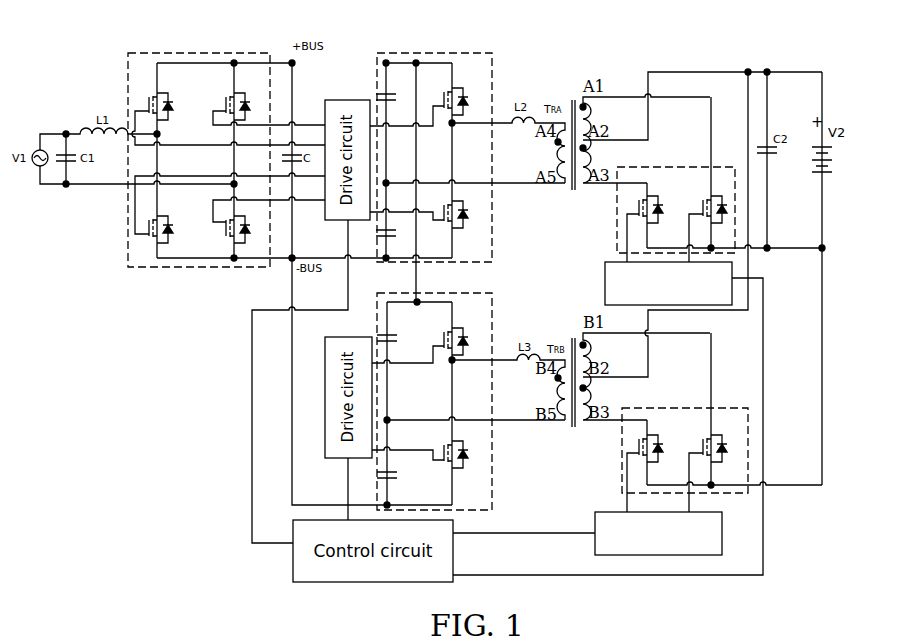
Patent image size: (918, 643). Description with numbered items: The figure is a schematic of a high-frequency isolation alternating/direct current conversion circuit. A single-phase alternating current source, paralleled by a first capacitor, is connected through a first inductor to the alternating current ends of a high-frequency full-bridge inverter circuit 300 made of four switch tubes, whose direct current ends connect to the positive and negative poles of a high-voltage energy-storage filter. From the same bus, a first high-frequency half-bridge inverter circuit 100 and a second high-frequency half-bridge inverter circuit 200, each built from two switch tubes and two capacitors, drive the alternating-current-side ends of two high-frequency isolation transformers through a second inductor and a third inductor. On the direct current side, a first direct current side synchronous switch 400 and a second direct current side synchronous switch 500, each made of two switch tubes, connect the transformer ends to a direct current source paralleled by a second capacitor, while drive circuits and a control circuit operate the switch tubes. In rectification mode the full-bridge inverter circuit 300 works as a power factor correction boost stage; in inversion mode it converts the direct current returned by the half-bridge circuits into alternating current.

The first high-frequency half-bridge inverter circuit 100 is at (413, 53).
The second high-frequency half-bridge inverter circuit 200 is at (487, 293).
The high-frequency full-bridge inverter circuit 300 is at (188, 53).
The first direct current side synchronous switch 400 is at (660, 167).
The second direct current side synchronous switch 500 is at (735, 493).